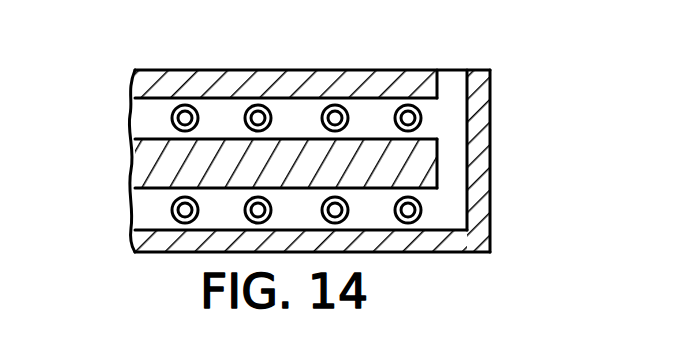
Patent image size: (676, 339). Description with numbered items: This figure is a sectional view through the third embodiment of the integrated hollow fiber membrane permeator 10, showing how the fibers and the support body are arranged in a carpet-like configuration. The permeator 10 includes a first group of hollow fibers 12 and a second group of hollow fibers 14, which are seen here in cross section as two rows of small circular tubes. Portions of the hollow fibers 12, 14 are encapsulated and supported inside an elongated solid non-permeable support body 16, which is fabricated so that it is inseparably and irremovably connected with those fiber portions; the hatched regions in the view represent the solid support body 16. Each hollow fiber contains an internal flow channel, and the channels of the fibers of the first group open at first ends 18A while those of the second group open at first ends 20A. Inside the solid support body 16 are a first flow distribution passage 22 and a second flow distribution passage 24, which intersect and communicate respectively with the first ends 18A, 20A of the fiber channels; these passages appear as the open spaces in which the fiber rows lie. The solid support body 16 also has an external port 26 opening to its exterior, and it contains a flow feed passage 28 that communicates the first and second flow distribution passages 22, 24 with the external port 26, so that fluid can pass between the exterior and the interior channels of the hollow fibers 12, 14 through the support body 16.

The integrated hollow fiber membrane permeator 10 is at (292, 150).
The first group of hollow fibers 12 is at (234, 244).
The second group of hollow fibers 14 is at (238, 86).
The solid support body 16 is at (152, 68).
The first end of internal flow channel 18A is at (184, 205).
The first end of internal flow channel 20A is at (187, 121).
The first flow distribution passage 22 is at (362, 208).
The second flow distribution passage 24 is at (293, 117).
The external port 26 is at (457, 70).
The flow feed passage 28 is at (452, 142).